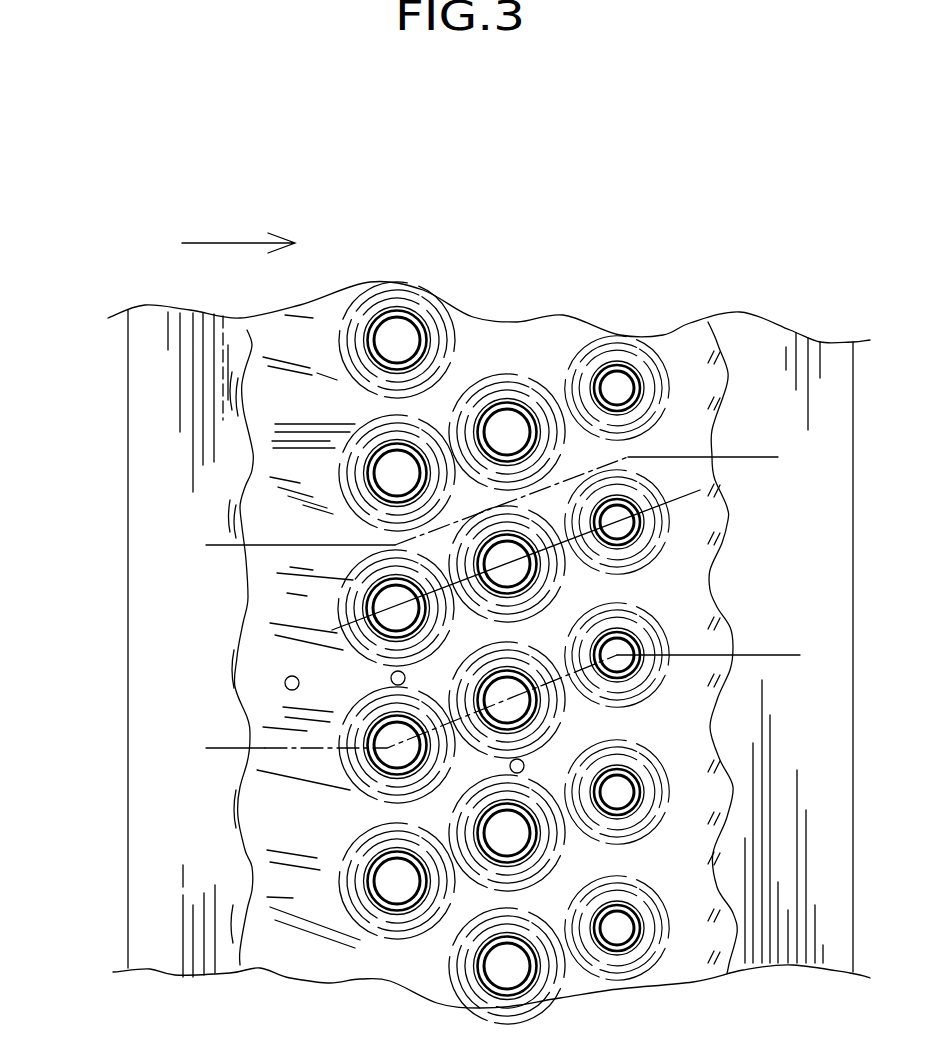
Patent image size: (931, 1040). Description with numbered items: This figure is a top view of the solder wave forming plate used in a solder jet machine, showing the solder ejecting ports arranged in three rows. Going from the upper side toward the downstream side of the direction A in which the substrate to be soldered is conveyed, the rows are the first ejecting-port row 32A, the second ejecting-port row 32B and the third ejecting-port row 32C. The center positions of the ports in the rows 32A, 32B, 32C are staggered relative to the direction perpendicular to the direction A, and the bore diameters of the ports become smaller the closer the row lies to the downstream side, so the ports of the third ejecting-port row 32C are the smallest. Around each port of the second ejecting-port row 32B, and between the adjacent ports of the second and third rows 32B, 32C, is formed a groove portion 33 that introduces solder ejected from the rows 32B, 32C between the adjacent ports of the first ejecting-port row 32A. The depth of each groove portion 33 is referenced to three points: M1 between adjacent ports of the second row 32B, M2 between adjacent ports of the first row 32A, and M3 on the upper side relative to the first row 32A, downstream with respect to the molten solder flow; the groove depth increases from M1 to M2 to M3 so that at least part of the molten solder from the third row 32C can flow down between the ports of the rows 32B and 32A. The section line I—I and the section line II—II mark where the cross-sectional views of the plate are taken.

The first ejecting-port row 32A is at (397, 325).
The second ejecting-port row 32B is at (506, 420).
The third ejecting-port row 32C is at (617, 380).
The groove portion 33 is at (293, 530).
The point between adjacent solder ejecting ports in the second ejecting-port row M1 is at (510, 769).
The point between adjacent solder ejecting ports in the first ejecting-port row M2 is at (391, 676).
The point on the upper side relative to the first ejecting-port row M3 is at (285, 684).
The line I— I is at (183, 738).
The line II— II is at (183, 538).
The direction in which the substrate subject to soldering is conveyed A is at (210, 243).